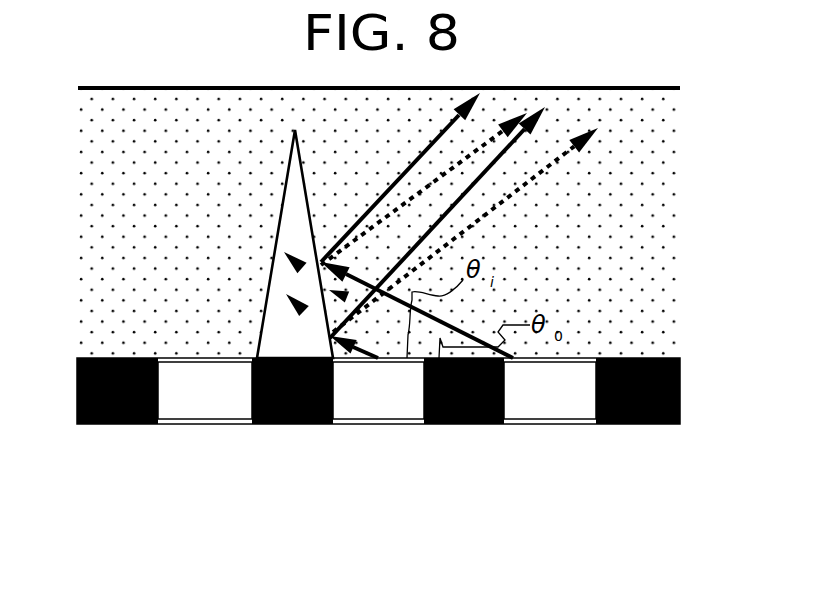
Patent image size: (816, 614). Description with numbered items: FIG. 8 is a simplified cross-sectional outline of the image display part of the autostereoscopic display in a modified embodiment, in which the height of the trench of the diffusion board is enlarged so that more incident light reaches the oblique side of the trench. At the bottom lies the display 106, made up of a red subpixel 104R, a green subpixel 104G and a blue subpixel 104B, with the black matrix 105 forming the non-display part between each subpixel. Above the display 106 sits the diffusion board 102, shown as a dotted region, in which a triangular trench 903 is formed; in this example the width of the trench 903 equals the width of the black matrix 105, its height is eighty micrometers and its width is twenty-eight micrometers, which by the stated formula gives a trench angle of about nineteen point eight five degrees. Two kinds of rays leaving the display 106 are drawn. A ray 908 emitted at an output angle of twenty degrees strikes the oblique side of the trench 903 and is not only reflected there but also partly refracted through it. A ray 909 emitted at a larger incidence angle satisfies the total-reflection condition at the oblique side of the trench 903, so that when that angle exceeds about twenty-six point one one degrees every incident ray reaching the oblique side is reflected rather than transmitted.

The diffusion board 102 is at (74, 89).
The display 106 is at (74, 360).
The black matrix 105 is at (120, 424).
The blue subpixel 104B is at (207, 424).
The red subpixel 104R is at (385, 424).
The green subpixel 104G is at (560, 424).
The trench 903 is at (273, 332).
The ray 908 is at (355, 255).
The ray 909 is at (358, 288).